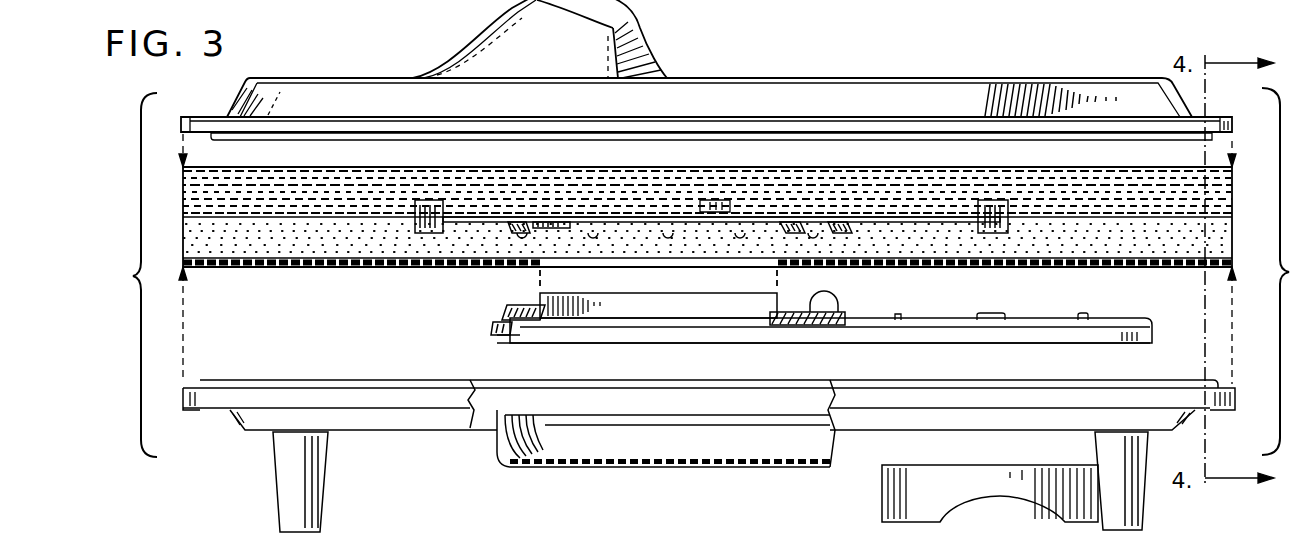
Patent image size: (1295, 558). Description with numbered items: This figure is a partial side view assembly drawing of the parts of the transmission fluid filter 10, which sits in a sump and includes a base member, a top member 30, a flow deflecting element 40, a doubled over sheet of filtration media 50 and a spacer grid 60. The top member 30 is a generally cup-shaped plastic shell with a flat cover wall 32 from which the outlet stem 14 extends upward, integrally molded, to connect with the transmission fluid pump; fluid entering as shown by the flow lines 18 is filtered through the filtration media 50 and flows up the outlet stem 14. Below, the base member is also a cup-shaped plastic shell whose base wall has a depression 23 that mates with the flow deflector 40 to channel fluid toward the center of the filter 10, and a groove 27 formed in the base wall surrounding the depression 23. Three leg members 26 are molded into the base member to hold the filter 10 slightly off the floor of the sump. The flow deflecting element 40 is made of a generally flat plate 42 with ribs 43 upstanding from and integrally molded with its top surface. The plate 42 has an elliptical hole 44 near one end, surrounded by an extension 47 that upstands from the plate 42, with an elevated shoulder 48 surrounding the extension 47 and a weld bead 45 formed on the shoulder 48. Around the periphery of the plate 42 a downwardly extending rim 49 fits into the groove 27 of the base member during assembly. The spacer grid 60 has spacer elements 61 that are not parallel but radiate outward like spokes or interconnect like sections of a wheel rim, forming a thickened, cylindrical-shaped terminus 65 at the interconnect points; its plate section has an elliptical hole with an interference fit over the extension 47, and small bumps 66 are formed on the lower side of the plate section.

The filter 10 is at (122, 292).
The outlet stem 14 is at (641, 46).
The flow lines 18 is at (1003, 0).
The depression 23 is at (665, 467).
The leg members 26 is at (283, 499).
The groove 27 is at (537, 462).
The top member 30 is at (1121, 79).
The cover wall 32 is at (819, 78).
The flow deflecting element 40 is at (806, 326).
The plate 42 is at (1036, 318).
The ribs 43 is at (1083, 314).
The elliptical hole 44 is at (660, 330).
The weld bead 45 is at (520, 306).
The extension 47 is at (815, 306).
The elevated shoulder 48 is at (795, 326).
The rim 49 is at (500, 333).
The filtration media 50 is at (1233, 170).
The spacer grid 60 is at (1012, 212).
The spacer elements 61 is at (475, 217).
The terminus 65 is at (430, 205).
The bumps 66 is at (593, 232).